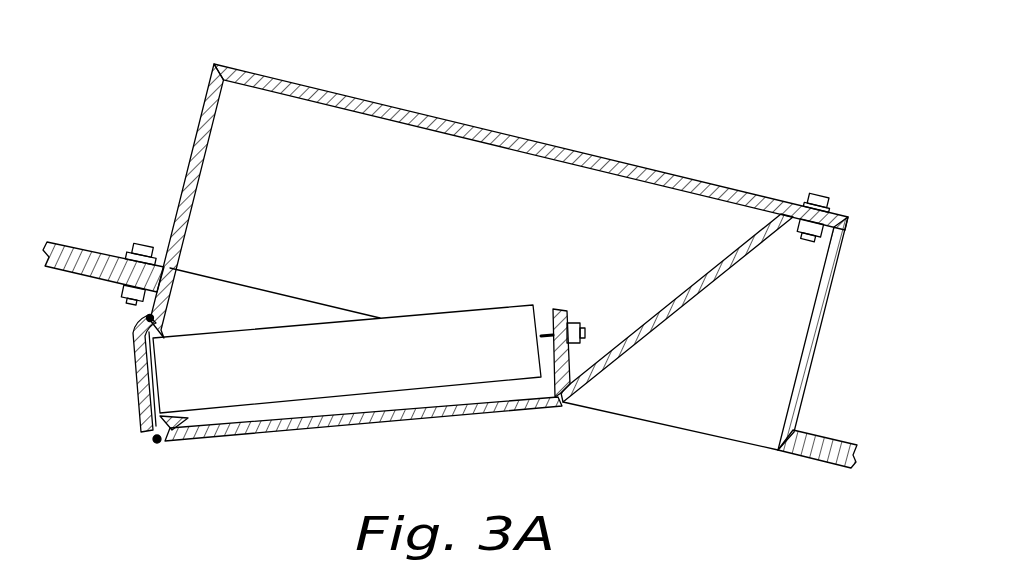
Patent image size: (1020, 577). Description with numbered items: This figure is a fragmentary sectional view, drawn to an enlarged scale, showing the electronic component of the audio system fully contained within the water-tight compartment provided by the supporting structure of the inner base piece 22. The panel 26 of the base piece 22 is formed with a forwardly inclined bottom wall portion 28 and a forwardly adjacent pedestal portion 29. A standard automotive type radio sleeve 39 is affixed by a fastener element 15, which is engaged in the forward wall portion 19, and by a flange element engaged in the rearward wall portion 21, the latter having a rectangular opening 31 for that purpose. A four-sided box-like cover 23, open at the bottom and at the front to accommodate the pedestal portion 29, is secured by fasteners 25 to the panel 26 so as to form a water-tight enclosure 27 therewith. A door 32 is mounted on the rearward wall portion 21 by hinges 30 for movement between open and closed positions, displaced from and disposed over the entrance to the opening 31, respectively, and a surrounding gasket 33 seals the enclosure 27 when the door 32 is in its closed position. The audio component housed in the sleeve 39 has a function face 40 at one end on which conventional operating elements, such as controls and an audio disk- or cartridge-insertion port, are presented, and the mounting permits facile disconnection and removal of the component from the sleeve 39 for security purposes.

The fastener element 15 is at (580, 326).
The forward wall portion 19 is at (557, 309).
The rearward wall portion 21 is at (202, 433).
The inner base piece 22 is at (845, 440).
The box-like cover 23 is at (504, 120).
The fasteners 25 is at (139, 240).
The panel 26 is at (70, 242).
The water-tight enclosure 27 is at (205, 142).
The bottom wall portion 28 is at (443, 418).
The pedestal portion 29 is at (825, 313).
The hinges 30 is at (153, 442).
The rectangular opening 31 is at (160, 338).
The door 32 is at (138, 378).
The gasket 33 is at (149, 318).
The radio sleeve 39 is at (325, 381).
The function face 40 is at (157, 383).